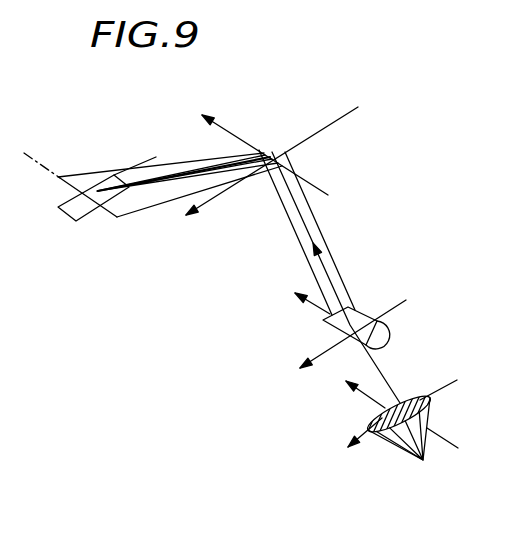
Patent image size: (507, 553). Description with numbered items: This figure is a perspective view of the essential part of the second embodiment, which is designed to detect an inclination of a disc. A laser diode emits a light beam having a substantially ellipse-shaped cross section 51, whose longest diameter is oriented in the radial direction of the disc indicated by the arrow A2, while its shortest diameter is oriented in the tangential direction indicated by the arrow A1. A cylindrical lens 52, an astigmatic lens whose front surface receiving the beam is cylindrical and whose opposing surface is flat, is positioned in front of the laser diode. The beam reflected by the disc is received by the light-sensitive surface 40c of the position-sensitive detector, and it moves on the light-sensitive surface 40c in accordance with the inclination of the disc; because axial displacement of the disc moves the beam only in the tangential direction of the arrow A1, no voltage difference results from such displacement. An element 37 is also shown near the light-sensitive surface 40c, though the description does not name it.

The light-sensitive surface 40c is at (66, 220).
The reflecting element 37 is at (113, 218).
The cylindrical lens 52 is at (325, 322).
The ellipse-shaped cross section 51 is at (413, 398).
The arrow indicating tangential direction A1 is at (230, 128).
The arrow indicating radial direction A2 is at (328, 124).